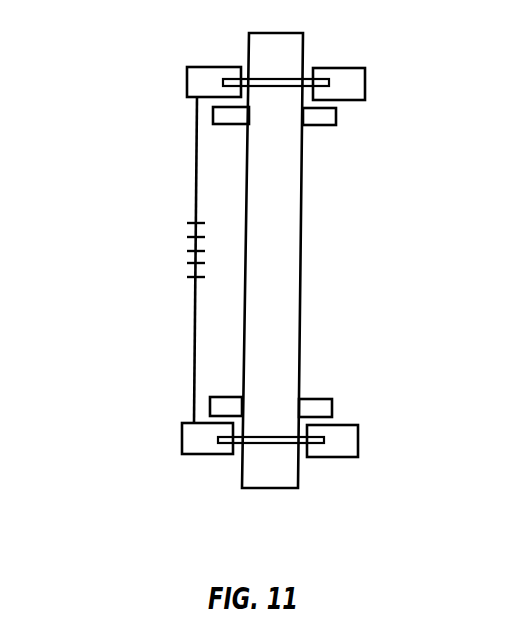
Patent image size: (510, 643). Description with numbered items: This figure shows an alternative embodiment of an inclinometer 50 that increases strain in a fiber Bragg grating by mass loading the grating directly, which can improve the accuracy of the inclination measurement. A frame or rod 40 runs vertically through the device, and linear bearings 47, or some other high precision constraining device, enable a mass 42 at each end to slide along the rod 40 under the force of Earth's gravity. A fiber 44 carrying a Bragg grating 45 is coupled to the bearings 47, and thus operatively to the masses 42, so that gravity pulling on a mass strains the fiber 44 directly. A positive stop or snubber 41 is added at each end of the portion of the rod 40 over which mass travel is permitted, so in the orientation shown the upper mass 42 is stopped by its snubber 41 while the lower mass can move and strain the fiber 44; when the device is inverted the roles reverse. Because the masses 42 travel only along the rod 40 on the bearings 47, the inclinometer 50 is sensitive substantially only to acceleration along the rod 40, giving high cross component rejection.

The inclinometer 50 is at (133, 68).
The rod 40 is at (303, 250).
The snubber 41 is at (322, 125).
The mass 42 is at (353, 68).
The fiber 44 is at (194, 350).
The Bragg grating 45 is at (194, 252).
The linear bearings 47 is at (267, 78).